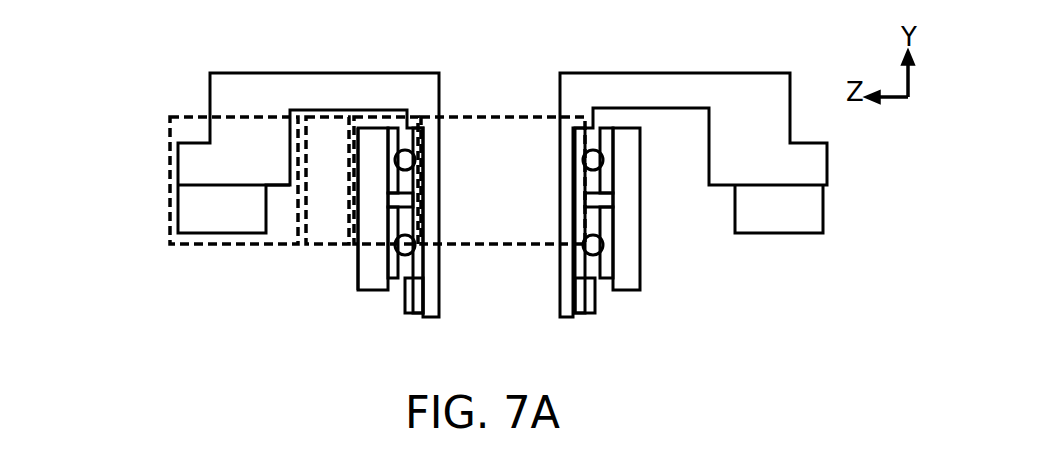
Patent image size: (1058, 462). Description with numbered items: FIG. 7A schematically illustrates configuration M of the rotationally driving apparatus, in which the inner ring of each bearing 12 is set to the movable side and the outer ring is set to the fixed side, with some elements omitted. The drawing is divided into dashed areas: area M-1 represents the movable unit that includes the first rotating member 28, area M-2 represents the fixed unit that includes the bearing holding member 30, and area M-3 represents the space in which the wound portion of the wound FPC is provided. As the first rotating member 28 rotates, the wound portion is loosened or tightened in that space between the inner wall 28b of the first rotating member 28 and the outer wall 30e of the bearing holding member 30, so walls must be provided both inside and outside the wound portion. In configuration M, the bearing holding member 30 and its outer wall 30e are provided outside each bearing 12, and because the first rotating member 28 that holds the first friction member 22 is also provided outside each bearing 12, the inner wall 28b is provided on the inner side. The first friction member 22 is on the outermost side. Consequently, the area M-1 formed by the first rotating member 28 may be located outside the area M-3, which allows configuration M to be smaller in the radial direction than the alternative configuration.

The first rotating member 28 is at (230, 138).
The inner wall 28b is at (290, 157).
The bearing holding member 30 is at (370, 262).
The outer wall 30e is at (353, 200).
The bearing 12 is at (605, 263).
The first friction member 22 is at (780, 212).
The area M-1 is at (245, 117).
The area M-2 is at (380, 113).
The area M-3 is at (320, 117).